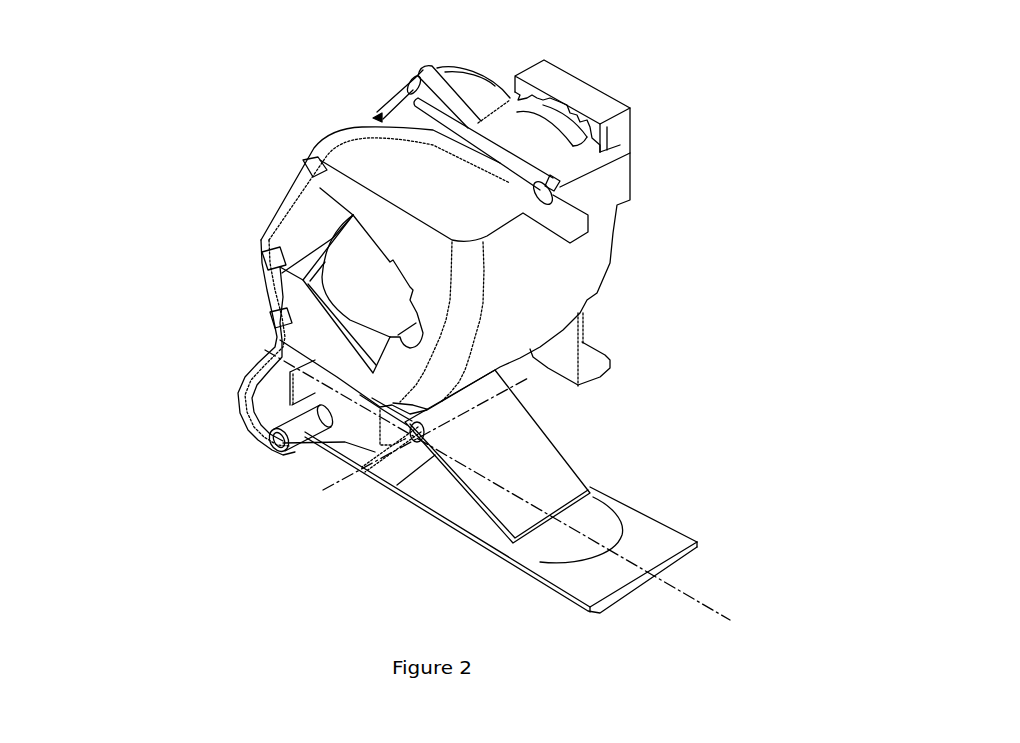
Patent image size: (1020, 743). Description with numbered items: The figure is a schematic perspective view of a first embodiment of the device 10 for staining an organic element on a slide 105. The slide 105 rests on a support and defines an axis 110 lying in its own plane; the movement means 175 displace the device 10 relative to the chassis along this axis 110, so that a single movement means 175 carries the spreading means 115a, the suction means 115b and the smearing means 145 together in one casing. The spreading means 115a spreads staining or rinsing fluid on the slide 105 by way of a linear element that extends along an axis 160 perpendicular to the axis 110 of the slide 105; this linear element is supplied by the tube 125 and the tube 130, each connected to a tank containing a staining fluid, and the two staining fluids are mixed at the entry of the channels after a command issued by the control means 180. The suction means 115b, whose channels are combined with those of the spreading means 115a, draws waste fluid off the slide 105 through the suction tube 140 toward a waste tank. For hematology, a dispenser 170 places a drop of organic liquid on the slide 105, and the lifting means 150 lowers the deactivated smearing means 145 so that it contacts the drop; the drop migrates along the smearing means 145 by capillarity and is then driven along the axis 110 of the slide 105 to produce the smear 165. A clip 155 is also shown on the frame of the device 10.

The device 10 is at (248, 70).
The slide 105 is at (523, 568).
The axis 110 is at (692, 595).
The spreading means 115a is at (288, 457).
The suction means 115b is at (279, 440).
The tube 125 is at (397, 100).
The tube 130 is at (420, 70).
The suction tube 140 is at (340, 132).
The smearing means 145 is at (552, 462).
The lifting means 150 is at (387, 307).
The clip 155 is at (265, 250).
The axis 160 is at (387, 463).
The smear 165 is at (607, 518).
The dispenser 170 is at (583, 342).
The movement means 175 is at (557, 113).
The control means 180 is at (617, 132).